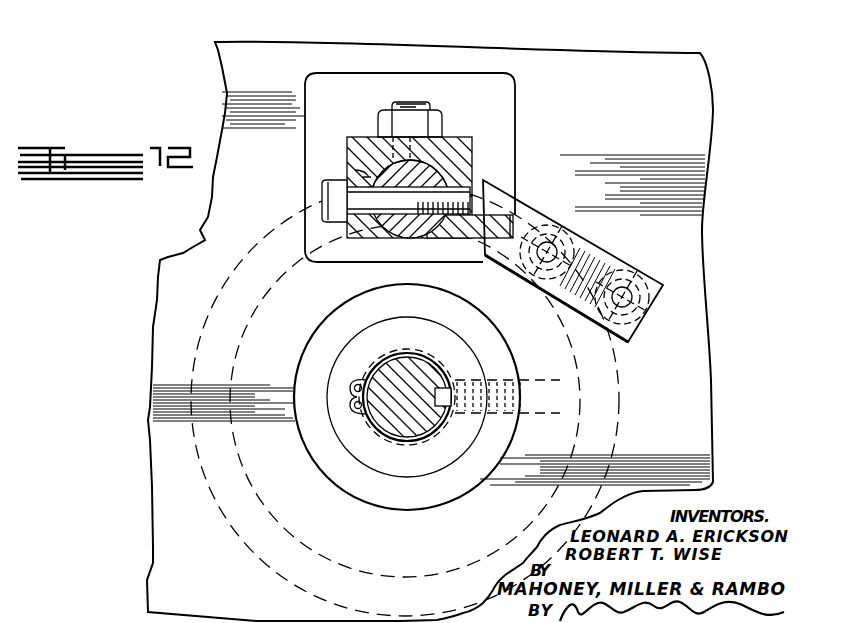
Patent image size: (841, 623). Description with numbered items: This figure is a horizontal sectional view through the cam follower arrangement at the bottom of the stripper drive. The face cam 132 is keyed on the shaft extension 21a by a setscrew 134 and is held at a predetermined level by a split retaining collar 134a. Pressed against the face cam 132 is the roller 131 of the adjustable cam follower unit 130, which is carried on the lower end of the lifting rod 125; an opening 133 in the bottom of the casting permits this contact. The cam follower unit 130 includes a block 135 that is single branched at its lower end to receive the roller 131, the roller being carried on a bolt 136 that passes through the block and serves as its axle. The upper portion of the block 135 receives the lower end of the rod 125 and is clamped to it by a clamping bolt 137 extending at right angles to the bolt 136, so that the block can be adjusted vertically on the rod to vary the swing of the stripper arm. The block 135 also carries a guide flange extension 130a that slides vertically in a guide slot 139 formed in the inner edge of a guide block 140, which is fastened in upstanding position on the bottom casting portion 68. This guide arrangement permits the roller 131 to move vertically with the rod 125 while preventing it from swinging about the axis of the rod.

The bottom casting portion 68 is at (712, 368).
The face cam 132 is at (267, 497).
The setscrew 134 is at (503, 380).
The shaft extension 21a is at (408, 372).
The split retaining collar 134a is at (352, 385).
The opening 133 is at (307, 97).
The cam follower unit 130 is at (457, 140).
The guide flange extension 130a is at (490, 242).
The lifting rod 125 is at (408, 238).
The roller 131 is at (447, 177).
The clamping bolt 137 is at (335, 186).
The block 135 is at (355, 170).
The bolt 136 is at (406, 101).
The guide slot 139 is at (497, 256).
The guide block 140 is at (556, 298).